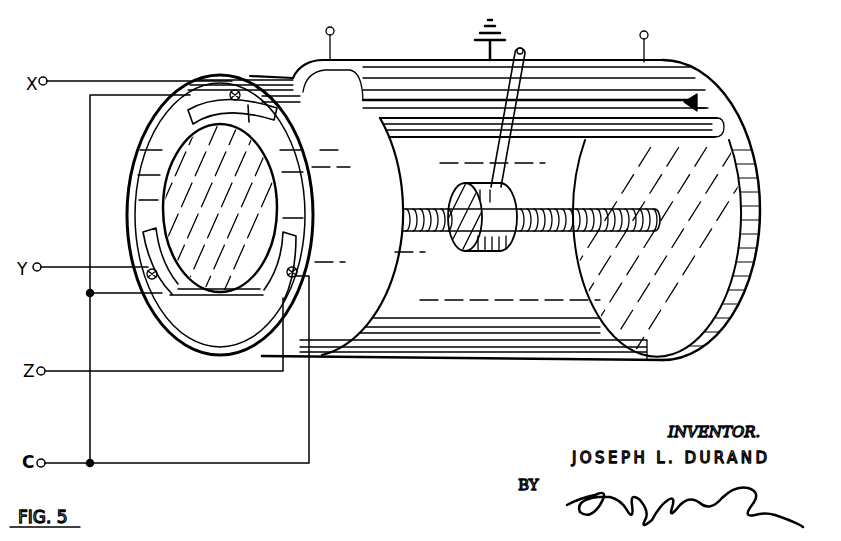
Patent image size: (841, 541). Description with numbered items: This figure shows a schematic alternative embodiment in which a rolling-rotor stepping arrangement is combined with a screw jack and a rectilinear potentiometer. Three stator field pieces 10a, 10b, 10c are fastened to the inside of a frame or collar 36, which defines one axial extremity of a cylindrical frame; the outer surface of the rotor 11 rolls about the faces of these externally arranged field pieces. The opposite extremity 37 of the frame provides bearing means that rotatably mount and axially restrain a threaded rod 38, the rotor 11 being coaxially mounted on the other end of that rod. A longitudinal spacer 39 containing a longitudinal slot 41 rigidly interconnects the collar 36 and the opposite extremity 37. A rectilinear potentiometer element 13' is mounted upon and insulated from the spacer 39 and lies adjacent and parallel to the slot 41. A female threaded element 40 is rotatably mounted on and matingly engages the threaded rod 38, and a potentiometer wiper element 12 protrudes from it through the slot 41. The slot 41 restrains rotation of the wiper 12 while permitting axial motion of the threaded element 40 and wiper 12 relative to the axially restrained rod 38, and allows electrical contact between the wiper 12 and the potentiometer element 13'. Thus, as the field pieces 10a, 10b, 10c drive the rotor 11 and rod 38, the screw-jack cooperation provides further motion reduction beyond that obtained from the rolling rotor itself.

The stator field piece 10a is at (232, 86).
The stator field piece 10b is at (290, 250).
The stator field piece 10c is at (166, 296).
The rotor 11 is at (297, 205).
The potentiometer wiper element 12 is at (528, 48).
The rectilinear potentiometer element 13' is at (443, 190).
The frame or collar 36 is at (348, 201).
The opposite extremity of the frame 37 is at (699, 184).
The threaded rod 38 is at (547, 233).
The longitudinal spacer 39 is at (730, 134).
The female threaded element 40 is at (493, 252).
The longitudinal slot 41 is at (692, 100).